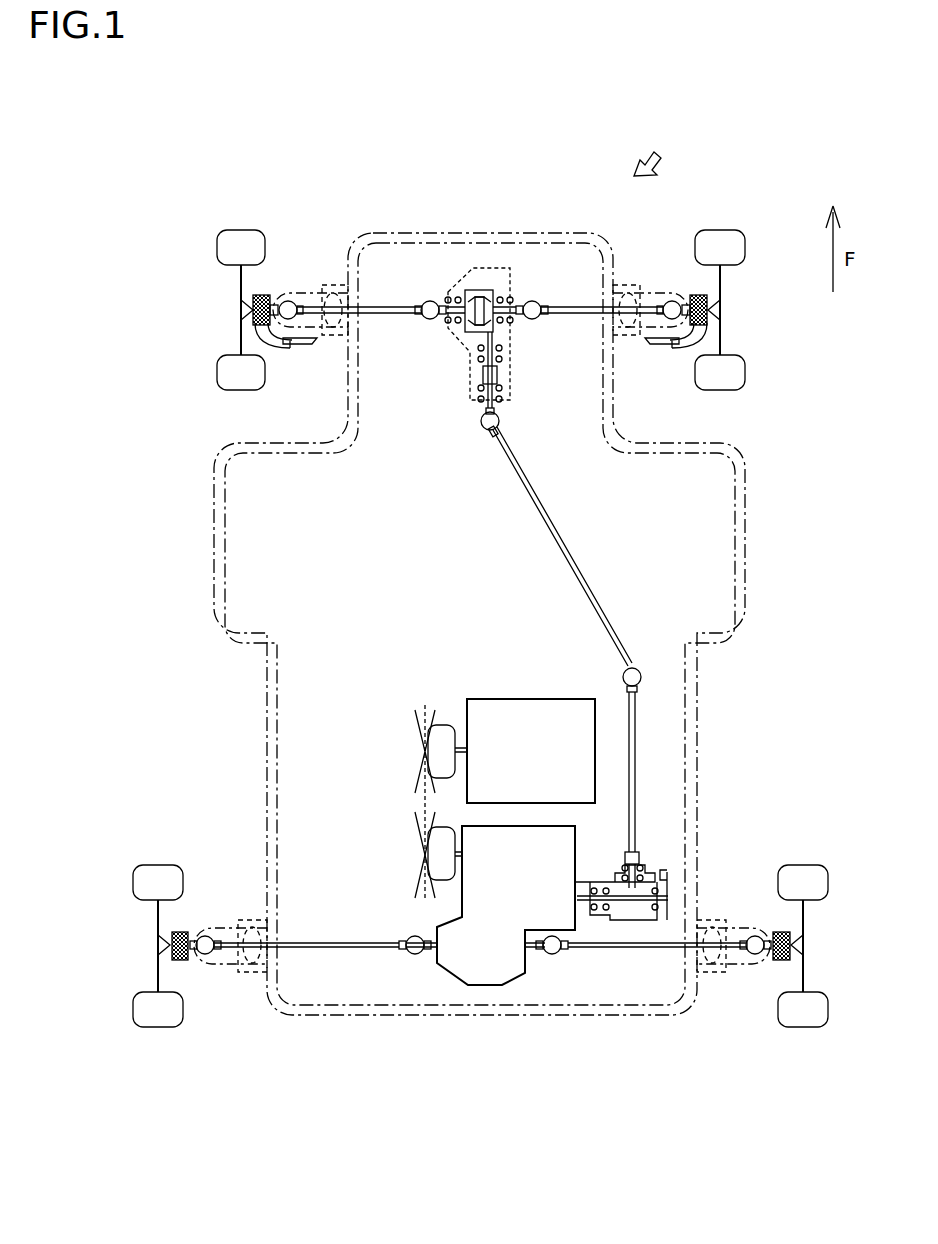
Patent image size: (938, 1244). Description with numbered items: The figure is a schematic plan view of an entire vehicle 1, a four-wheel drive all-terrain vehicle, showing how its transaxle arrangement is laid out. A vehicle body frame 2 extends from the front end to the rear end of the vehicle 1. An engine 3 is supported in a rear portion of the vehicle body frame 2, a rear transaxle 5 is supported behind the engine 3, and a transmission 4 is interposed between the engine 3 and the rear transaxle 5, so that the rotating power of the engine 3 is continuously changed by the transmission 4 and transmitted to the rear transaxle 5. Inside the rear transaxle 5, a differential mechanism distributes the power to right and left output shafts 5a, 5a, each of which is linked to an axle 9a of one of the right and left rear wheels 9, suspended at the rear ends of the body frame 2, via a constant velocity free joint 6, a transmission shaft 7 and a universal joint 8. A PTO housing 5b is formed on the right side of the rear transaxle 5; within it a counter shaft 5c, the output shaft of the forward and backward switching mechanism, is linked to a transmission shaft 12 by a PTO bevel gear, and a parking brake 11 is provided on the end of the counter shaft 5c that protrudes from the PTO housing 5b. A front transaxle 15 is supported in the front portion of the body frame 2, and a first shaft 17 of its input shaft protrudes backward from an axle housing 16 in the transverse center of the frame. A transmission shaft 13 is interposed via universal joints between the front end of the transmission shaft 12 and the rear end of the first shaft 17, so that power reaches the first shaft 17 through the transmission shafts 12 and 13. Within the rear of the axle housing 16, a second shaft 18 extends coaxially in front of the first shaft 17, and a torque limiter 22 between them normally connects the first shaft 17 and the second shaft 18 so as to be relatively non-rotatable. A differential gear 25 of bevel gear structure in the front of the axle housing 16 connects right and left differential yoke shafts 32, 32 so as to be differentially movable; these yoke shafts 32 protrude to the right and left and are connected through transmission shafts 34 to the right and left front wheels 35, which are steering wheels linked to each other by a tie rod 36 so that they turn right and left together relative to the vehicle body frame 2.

The vehicle 1 is at (648, 151).
The vehicle body frame 2 is at (563, 226).
The engine 3 is at (464, 686).
The transmission 4 is at (392, 811).
The rear transaxle 5 is at (537, 943).
The output shaft 5a is at (432, 952).
The PTO housing 5b is at (612, 922).
The counter shaft 5c is at (603, 890).
The constant velocity free joint 6 is at (410, 936).
The transmission shaft 7 is at (372, 940).
The universal joint 8 is at (206, 954).
The rear wheel 9 is at (176, 1028).
The axle 9a is at (181, 962).
The parking brake 11 is at (669, 855).
The transmission shaft 12 is at (637, 773).
The transmission shaft 13 is at (558, 540).
The front transaxle 15 is at (508, 308).
The axle housing 16 is at (480, 266).
The first shaft 17 is at (476, 395).
The second shaft 18 is at (478, 352).
The torque limiter 22 is at (497, 376).
The differential gear 25 is at (494, 283).
The differential yoke shaft 32 is at (444, 300).
The transmission shaft 34 is at (388, 318).
The front wheel 35 is at (255, 232).
The tie rod 36 is at (306, 348).